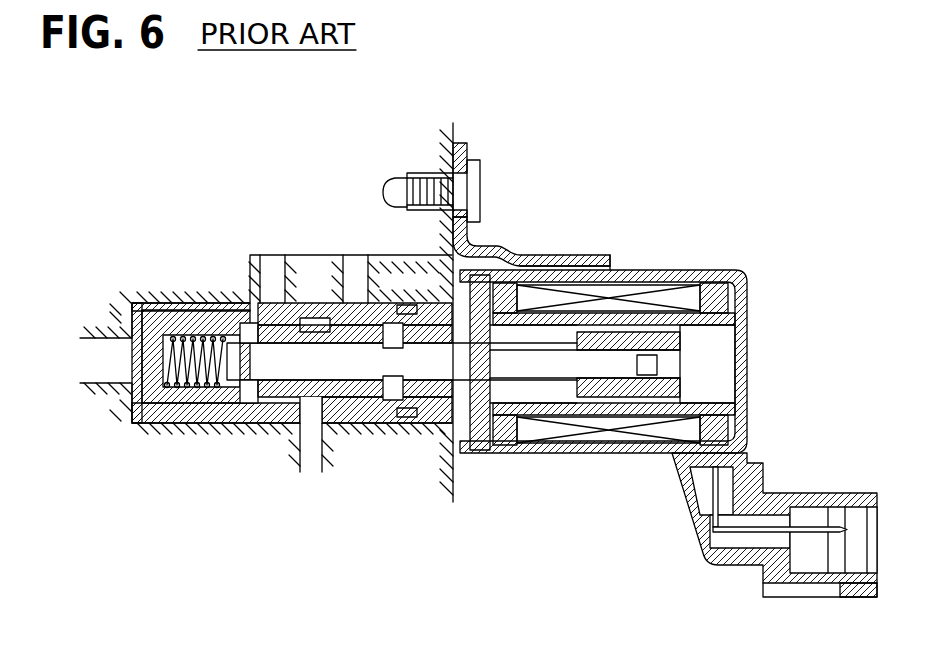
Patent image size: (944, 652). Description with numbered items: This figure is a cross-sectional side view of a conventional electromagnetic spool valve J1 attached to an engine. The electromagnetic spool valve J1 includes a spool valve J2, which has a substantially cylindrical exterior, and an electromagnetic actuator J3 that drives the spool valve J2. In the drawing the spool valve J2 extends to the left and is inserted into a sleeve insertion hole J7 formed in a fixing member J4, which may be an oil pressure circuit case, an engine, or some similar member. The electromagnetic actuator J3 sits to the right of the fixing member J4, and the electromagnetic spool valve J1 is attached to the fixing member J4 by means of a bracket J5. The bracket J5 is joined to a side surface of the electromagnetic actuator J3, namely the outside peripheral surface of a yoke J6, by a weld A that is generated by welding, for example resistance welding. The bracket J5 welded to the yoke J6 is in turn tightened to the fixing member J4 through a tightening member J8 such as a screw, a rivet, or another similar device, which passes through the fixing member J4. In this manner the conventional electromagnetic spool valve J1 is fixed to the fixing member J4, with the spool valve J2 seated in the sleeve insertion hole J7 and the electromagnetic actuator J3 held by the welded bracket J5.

The electromagnetic spool valve J1 is at (598, 484).
The spool valve J2 is at (172, 304).
The electromagnetic actuator J3 is at (740, 262).
The fixing member J4 is at (458, 130).
The bracket J5 is at (503, 250).
The yoke J6 is at (645, 270).
The sleeve insertion hole J7 is at (232, 413).
The tightening member J8 is at (477, 173).
The weld A is at (552, 267).